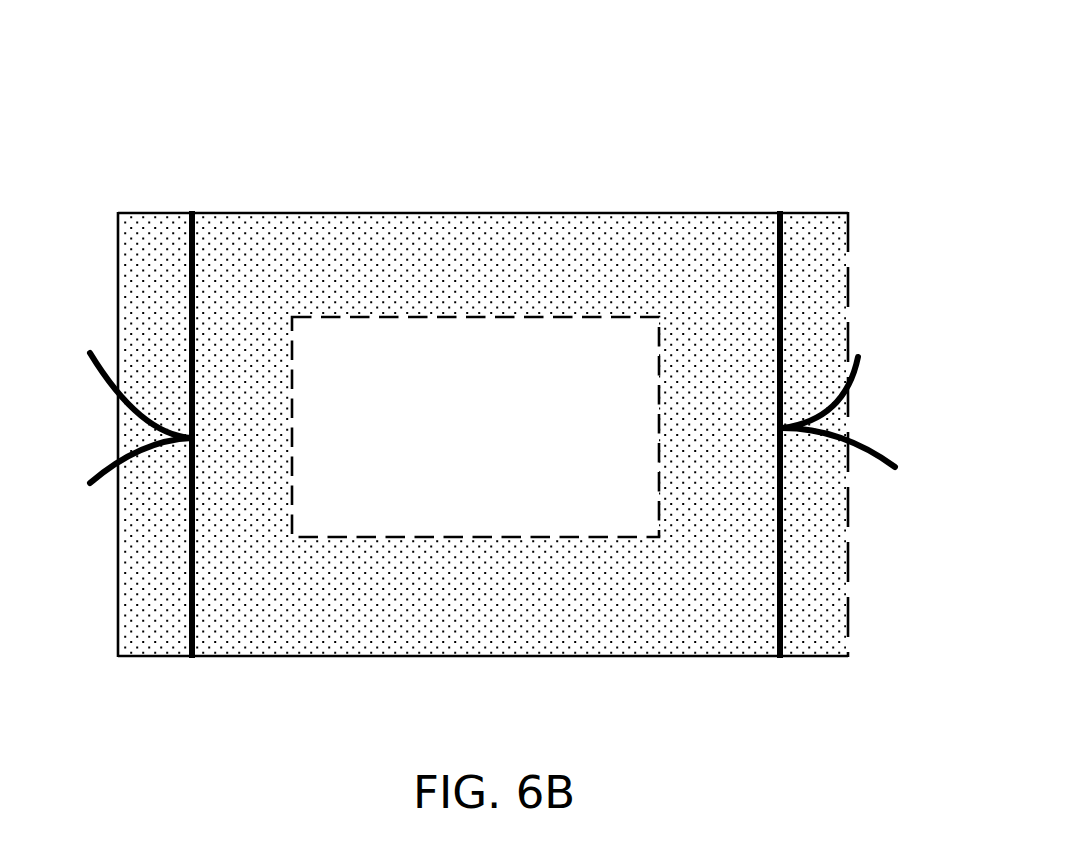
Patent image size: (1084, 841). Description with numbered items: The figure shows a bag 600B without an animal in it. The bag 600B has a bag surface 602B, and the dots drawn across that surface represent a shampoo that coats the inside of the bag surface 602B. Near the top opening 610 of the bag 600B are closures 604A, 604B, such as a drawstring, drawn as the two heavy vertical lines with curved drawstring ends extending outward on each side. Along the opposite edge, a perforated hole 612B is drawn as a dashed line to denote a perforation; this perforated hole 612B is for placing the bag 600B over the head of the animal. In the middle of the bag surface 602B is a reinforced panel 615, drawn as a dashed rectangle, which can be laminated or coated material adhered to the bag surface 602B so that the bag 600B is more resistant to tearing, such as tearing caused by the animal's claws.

The bag 600B is at (528, 82).
The bag surface 602B is at (620, 656).
The closure 604A is at (193, 242).
The closure 604B is at (778, 243).
The top opening 610 is at (117, 228).
The perforated hole 612B is at (850, 627).
The reinforced panel 615 is at (475, 427).